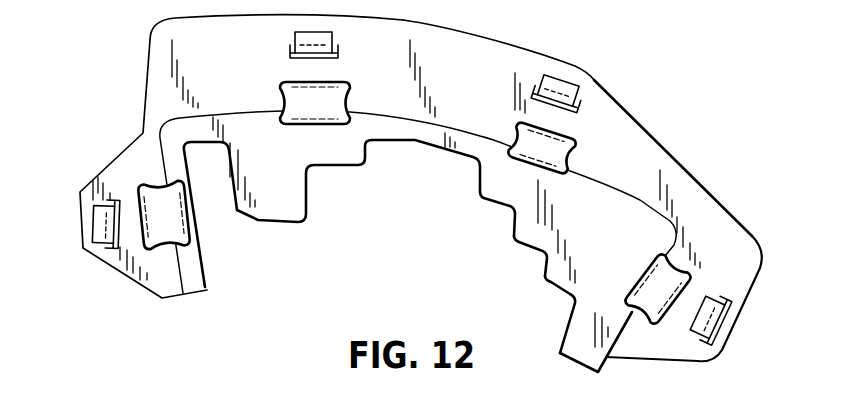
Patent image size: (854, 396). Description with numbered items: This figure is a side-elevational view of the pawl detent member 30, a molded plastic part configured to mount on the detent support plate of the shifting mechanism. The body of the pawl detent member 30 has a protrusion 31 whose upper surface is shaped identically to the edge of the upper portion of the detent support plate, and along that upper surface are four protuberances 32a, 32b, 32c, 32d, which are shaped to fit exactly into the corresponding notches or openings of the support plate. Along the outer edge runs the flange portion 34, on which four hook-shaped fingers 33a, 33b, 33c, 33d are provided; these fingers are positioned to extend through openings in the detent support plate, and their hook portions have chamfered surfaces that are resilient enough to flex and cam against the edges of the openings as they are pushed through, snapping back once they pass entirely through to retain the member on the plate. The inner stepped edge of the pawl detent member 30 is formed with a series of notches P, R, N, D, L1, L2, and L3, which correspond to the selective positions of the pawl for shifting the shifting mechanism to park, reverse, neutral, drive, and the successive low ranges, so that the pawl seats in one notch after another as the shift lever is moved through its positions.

The pawl detent member 30 is at (719, 133).
The protrusion 31 is at (442, 129).
The protuberance 32a is at (177, 220).
The protuberance 32b is at (340, 100).
The protuberance 32c is at (568, 133).
The protuberance 32d is at (642, 296).
The hook-shaped finger 33a is at (100, 225).
The hook-shaped finger 33b is at (333, 33).
The hook-shaped finger 33c is at (583, 82).
The hook-shaped finger 33d is at (722, 347).
The flange portion 34 is at (523, 58).
The park notch P is at (199, 150).
The reverse notch R is at (323, 170).
The neutral notch N is at (423, 150).
The drive notch D is at (473, 160).
The low notch L1 is at (508, 218).
The low notch L2 is at (540, 257).
The low gear 3 position L3 is at (562, 305).